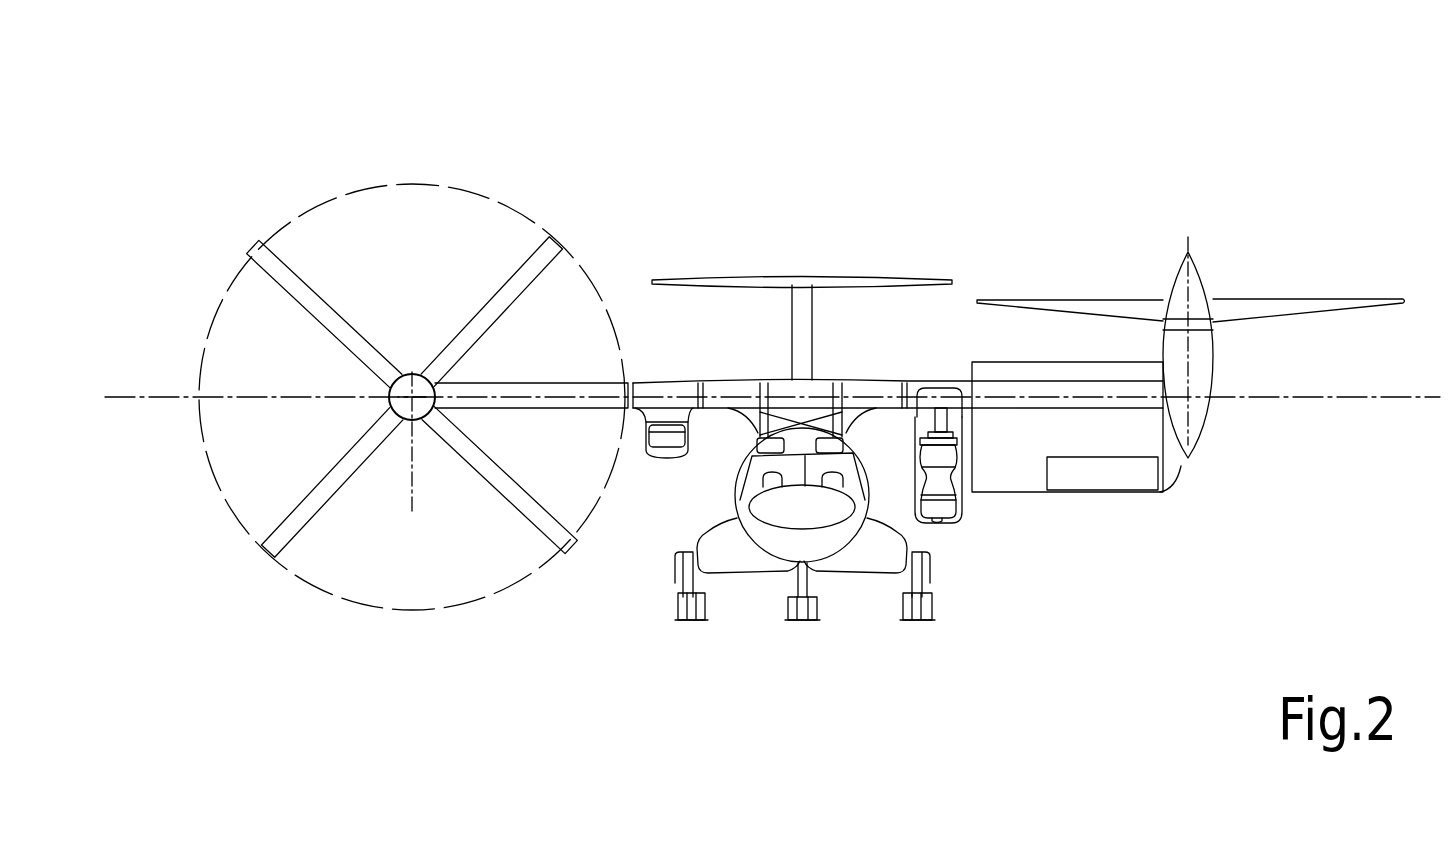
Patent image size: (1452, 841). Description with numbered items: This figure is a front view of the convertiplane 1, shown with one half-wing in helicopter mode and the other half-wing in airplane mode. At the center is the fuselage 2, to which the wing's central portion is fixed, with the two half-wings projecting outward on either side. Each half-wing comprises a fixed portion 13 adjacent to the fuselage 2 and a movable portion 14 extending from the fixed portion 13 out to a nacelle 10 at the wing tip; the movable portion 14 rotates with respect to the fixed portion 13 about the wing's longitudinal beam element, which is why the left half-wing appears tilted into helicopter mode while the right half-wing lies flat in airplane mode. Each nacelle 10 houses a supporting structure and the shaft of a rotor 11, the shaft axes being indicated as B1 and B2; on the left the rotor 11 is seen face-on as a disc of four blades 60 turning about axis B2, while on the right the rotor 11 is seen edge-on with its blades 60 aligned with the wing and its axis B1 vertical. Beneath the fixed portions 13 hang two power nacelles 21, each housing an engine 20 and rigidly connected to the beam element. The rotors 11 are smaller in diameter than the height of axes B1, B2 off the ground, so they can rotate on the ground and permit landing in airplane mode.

The convertiplane 1 is at (1115, 105).
The fuselage 2 is at (727, 489).
The nacelle 10 is at (392, 401).
The rotor 11 is at (340, 504).
The fixed portion 13 is at (706, 387).
The movable portion 14 is at (564, 385).
The engine 20 is at (935, 492).
The power nacelle 21 is at (660, 455).
The blade 60 is at (332, 332).
The rotor shaft axis B1 is at (1183, 245).
The rotor shaft axis B2 is at (416, 464).